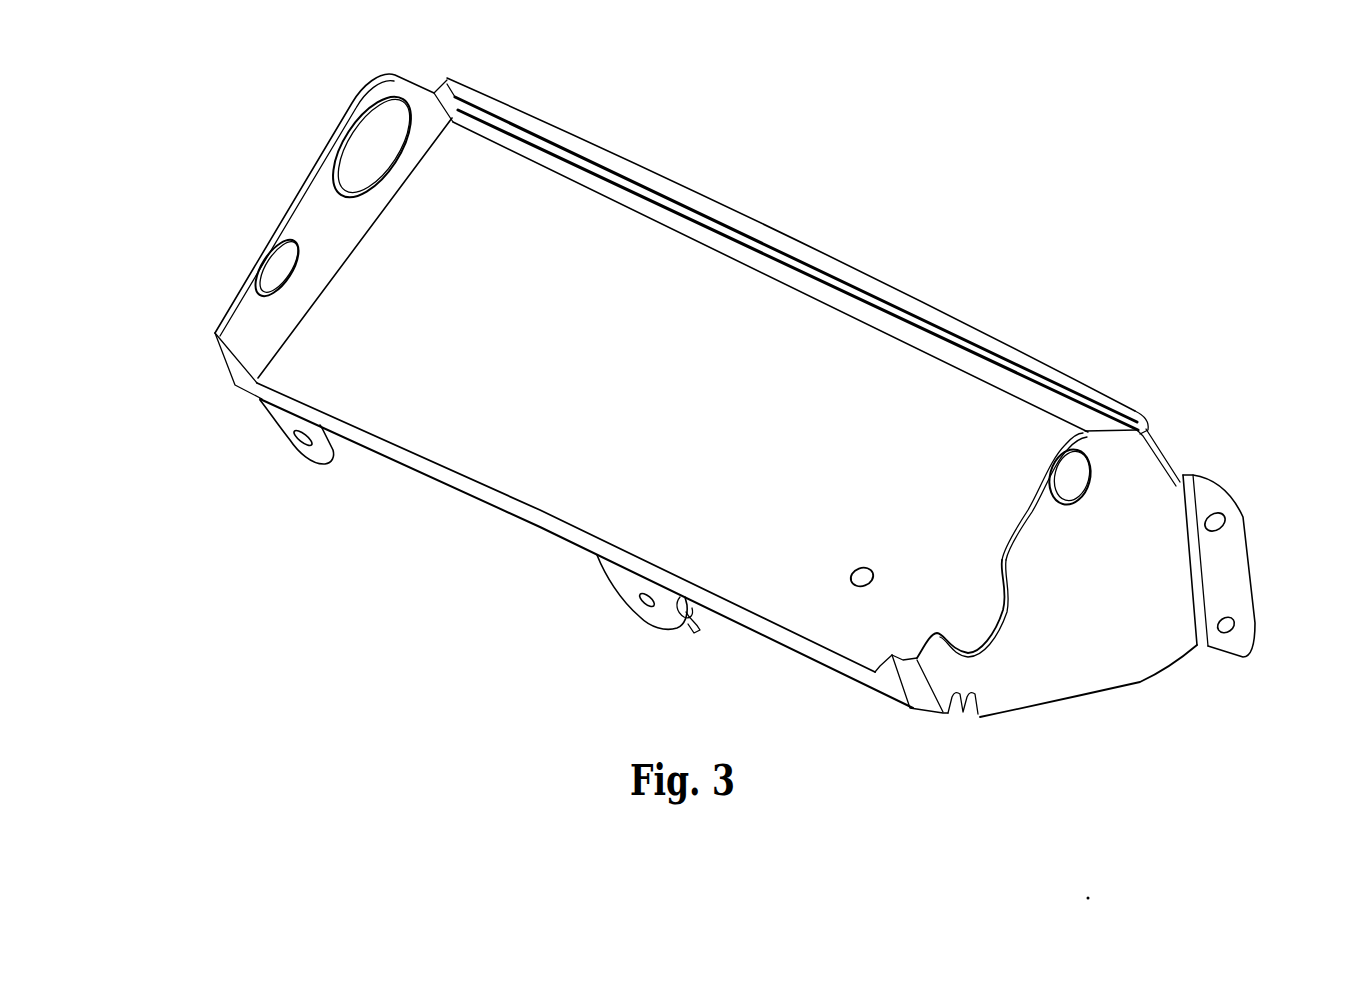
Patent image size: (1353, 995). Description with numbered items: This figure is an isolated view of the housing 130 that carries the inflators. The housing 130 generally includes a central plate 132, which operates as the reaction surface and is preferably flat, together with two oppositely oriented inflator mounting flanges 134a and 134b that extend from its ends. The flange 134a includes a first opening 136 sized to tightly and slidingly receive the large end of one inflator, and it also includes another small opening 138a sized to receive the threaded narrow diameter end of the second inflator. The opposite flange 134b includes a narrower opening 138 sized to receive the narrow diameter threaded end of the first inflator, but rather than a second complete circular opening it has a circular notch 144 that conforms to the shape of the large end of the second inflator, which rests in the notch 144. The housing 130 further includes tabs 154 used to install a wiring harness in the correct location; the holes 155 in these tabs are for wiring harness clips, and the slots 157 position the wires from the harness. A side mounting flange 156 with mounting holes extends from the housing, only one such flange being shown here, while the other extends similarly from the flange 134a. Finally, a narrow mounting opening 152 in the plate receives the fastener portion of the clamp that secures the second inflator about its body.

The housing 130 is at (410, 470).
The central plate 132 is at (652, 367).
The inflator mounting flange 134a is at (313, 210).
The inflator mounting flange 134b is at (1120, 483).
The first opening 136 is at (365, 147).
The narrower opening 138 is at (1066, 478).
The small opening 138a is at (280, 266).
The notch 144 is at (995, 612).
The narrow mounting opening 152 is at (853, 572).
The tabs 154 is at (297, 448).
The holes 155 is at (308, 445).
The side mounting flange 156 is at (1233, 587).
The slots 157 is at (684, 632).